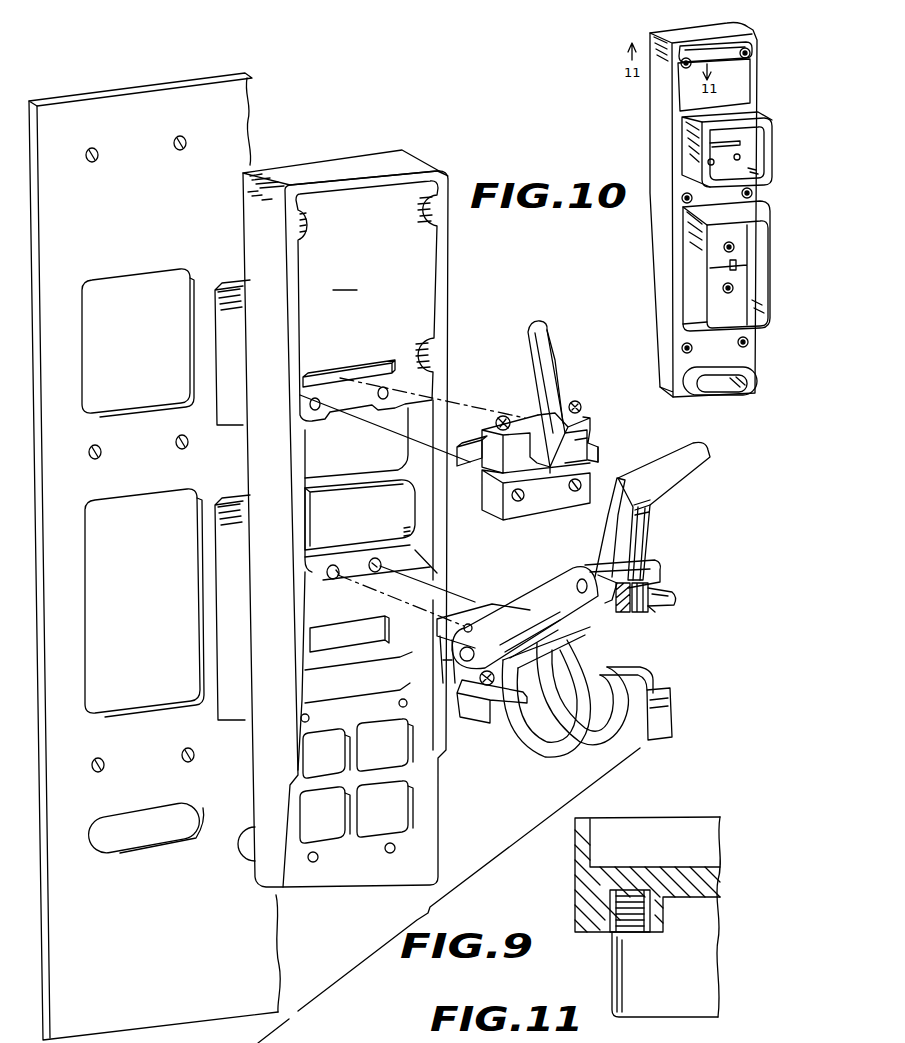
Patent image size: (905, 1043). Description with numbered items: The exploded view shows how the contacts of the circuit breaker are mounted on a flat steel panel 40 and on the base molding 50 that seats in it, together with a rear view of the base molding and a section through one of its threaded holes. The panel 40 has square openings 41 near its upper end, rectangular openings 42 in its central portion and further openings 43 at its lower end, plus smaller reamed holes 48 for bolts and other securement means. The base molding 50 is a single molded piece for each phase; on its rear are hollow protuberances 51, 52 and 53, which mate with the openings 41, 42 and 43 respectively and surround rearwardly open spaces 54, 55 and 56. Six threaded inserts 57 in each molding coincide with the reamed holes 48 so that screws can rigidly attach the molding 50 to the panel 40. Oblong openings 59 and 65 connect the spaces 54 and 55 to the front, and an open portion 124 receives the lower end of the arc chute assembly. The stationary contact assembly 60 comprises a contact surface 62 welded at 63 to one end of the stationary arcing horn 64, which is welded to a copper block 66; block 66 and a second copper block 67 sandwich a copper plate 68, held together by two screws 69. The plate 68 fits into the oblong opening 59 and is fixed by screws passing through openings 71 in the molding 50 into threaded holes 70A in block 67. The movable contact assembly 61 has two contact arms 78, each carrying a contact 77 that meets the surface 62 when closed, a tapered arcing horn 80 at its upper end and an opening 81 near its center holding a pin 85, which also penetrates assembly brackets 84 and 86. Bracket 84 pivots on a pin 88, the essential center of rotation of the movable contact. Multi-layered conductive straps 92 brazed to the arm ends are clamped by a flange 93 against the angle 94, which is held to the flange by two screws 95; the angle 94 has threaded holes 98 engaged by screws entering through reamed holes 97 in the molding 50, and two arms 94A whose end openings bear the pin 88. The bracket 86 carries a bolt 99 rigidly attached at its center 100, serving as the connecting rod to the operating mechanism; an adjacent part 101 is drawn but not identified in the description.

In FIG. 9, the steel panel 40 is at (70, 115).
In FIG. 9, the openings 41 is at (122, 282).
In FIG. 9, the rectangular openings 42 is at (120, 505).
In FIG. 9, the openings 43 is at (124, 825).
In FIG. 9, the reamed holes 48 is at (96, 148).
In FIG. 9, the base molding 50 is at (343, 160).
In FIG. 10, the base molding 50 is at (652, 114).
In FIG. 11, the base molding 50 is at (575, 833).
In FIG. 10, the protuberance 51 is at (763, 122).
In FIG. 11, the protuberance 51 is at (713, 975).
In FIG. 10, the protuberance 52 is at (768, 218).
In FIG. 10, the protuberance 53 is at (758, 378).
In FIG. 10, the space 54 is at (760, 164).
In FIG. 10, the space 55 is at (760, 293).
In FIG. 10, the space 56 is at (728, 393).
In FIG. 10, the threaded inserts 57 is at (752, 52).
In FIG. 11, the threaded inserts 57 is at (606, 937).
In FIG. 9, the oblong opening 59 is at (383, 366).
In FIG. 10, the oblong opening 59 is at (740, 142).
In FIG. 9, the stationary contact assembly 60 is at (547, 422).
In FIG. 9, the movable contact assembly 61 is at (652, 586).
In FIG. 9, the contact surface 62 is at (590, 446).
In FIG. 9, the weld 63 is at (549, 474).
In FIG. 9, the stationary arcing horn 64 is at (545, 336).
In FIG. 9, the oblong opening 65 is at (372, 632).
In FIG. 10, the oblong opening 65 is at (737, 265).
In FIG. 9, the copper block 66 is at (530, 418).
In FIG. 9, the copper block 67 is at (490, 508).
In FIG. 9, the copper plate 68 is at (600, 458).
In FIG. 9, the screws 69 is at (503, 416).
In FIG. 9, the threaded holes 70A is at (518, 501).
In FIG. 9, the openings 71 is at (388, 392).
In FIG. 9, the contact 77 is at (606, 490).
In FIG. 9, the contact arm 78 is at (645, 523).
In FIG. 9, the tapered arcing horn 80 is at (686, 452).
In FIG. 9, the opening 81 is at (575, 570).
In FIG. 9, the assembly bracket 84 is at (525, 605).
In FIG. 9, the pin 85 is at (578, 590).
In FIG. 9, the bracket 86 is at (662, 565).
In FIG. 9, the pin 88 is at (458, 652).
In FIG. 9, the multi-layered conductive strap 92 is at (552, 757).
In FIG. 9, the flange 93 is at (476, 722).
In FIG. 9, the angle 94 is at (490, 600).
In FIG. 9, the arms 94A is at (452, 652).
In FIG. 9, the screws 95 is at (496, 678).
In FIG. 9, the reamed holes 97 is at (370, 565).
In FIG. 9, the threaded holes 98 is at (470, 622).
In FIG. 9, the bolt 99 is at (680, 600).
In FIG. 9, the center 100 is at (620, 616).
In FIG. 9, the nut 101 is at (653, 612).
In FIG. 9, the open portion 124 is at (344, 282).